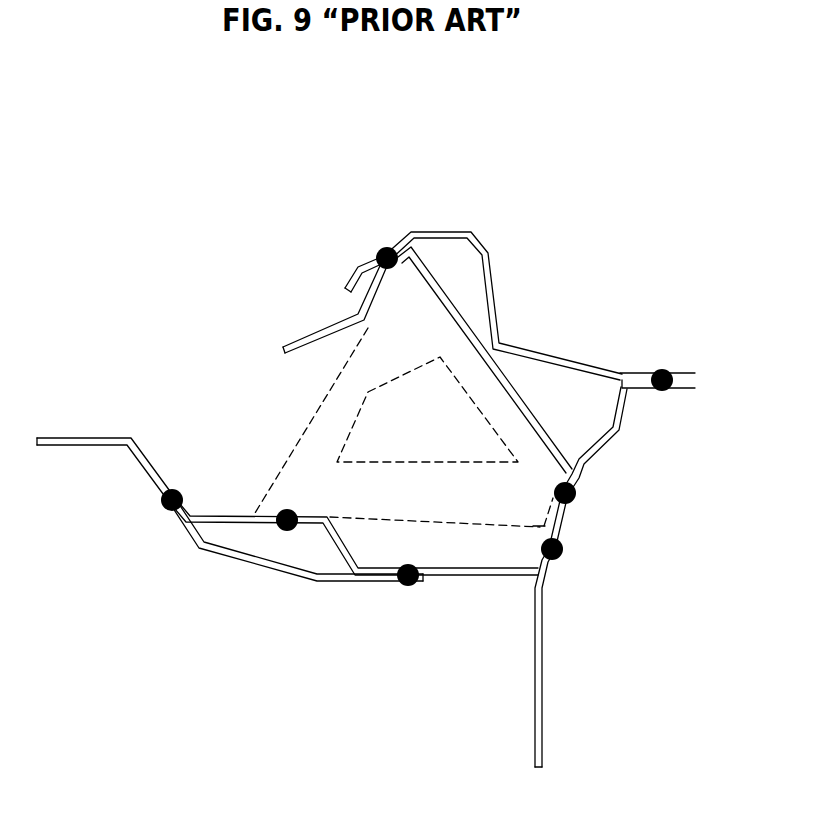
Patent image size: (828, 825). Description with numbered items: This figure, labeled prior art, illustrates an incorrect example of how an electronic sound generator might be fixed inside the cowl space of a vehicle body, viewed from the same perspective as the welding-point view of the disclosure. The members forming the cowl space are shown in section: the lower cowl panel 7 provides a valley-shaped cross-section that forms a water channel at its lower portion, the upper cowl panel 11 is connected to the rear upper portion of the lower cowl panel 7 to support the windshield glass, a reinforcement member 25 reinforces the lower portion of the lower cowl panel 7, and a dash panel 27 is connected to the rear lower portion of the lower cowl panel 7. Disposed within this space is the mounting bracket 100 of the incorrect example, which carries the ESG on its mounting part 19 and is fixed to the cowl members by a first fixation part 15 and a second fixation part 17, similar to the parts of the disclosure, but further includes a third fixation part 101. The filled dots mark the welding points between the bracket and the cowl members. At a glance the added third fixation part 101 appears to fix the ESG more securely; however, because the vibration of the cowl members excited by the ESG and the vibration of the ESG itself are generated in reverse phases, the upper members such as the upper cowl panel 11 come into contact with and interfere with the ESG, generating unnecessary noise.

The lower cowl panel 7 is at (618, 425).
The upper cowl panel 11 is at (583, 363).
The first fixation part 15 is at (384, 248).
The second fixation part 17 is at (578, 475).
The mounting part 19 is at (297, 326).
The reinforcement member 25 is at (328, 582).
The dash panel 27 is at (545, 683).
The mounting bracket 100 is at (447, 268).
The third fixation part 101 is at (287, 531).